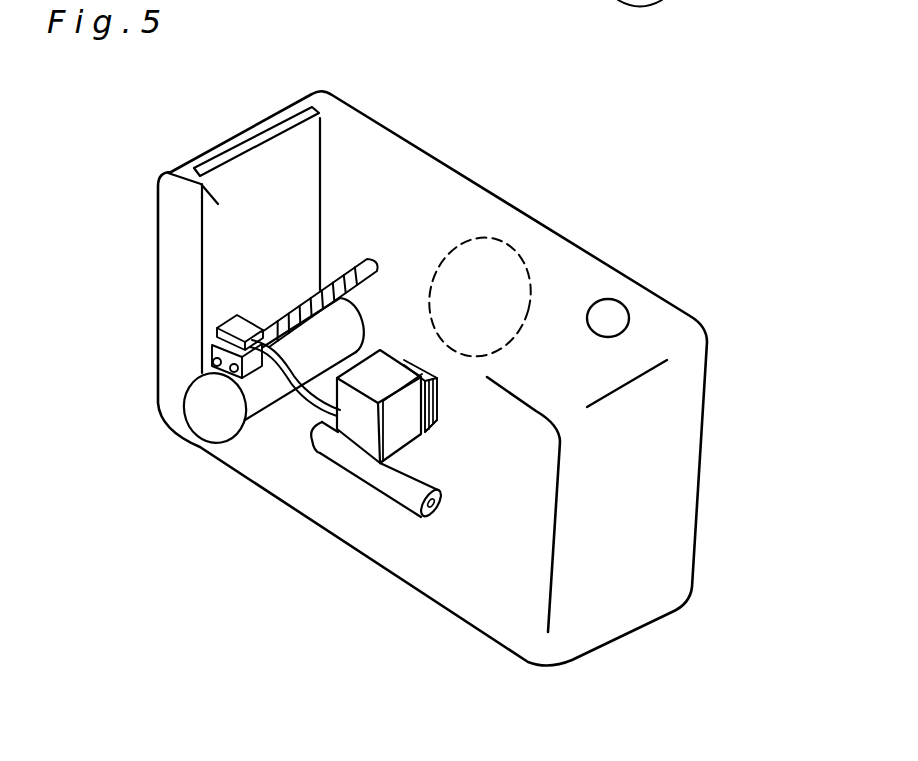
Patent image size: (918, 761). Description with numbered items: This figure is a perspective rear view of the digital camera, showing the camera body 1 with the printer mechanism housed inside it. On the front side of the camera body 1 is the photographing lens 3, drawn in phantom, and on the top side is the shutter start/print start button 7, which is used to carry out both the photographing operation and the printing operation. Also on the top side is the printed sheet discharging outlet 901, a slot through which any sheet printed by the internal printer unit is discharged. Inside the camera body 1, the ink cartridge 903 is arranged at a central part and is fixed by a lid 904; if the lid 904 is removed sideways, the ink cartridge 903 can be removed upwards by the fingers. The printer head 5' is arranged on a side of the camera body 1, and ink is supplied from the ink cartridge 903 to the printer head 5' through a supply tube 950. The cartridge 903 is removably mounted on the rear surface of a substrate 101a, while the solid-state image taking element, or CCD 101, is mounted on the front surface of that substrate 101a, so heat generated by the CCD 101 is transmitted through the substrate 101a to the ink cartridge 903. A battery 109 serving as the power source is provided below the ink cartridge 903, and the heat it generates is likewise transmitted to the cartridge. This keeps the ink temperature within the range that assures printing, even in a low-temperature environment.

The camera body 1 is at (704, 492).
The photographing lens 3 is at (487, 287).
The shutter start/print start button 7 is at (608, 318).
The printer head 5' is at (180, 346).
The printed sheet discharging outlet 901 is at (252, 145).
The supply tube 950 is at (307, 410).
The ink cartridge 903 is at (363, 437).
The lid 904 is at (399, 428).
The solid-state image taking element (CCD) 101 is at (438, 409).
The substrate 101a is at (430, 425).
The battery 109 is at (427, 527).